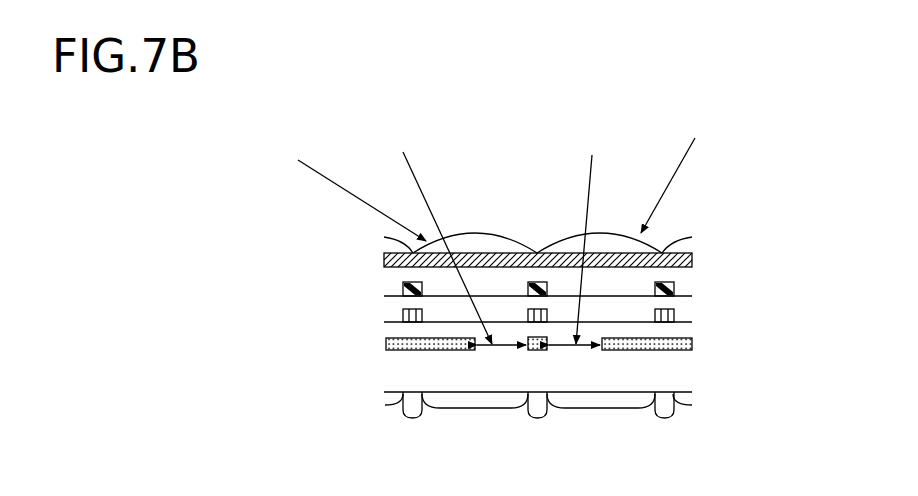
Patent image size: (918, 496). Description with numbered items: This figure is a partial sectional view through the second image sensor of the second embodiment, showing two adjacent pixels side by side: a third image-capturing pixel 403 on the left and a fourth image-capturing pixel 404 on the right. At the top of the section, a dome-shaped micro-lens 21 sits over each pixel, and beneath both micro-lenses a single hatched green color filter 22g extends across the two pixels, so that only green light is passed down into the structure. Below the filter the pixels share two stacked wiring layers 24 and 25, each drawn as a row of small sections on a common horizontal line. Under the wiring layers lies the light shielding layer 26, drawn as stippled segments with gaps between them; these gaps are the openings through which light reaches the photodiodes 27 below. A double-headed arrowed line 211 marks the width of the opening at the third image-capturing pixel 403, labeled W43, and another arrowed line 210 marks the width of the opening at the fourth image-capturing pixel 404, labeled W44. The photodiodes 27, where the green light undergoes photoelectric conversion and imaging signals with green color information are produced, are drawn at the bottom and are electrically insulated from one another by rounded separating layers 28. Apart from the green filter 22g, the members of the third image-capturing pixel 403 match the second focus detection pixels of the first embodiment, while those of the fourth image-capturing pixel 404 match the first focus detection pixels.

The micro-lens 21 is at (465, 240).
The green color filter 22g is at (640, 257).
The wiring layer 24 is at (403, 283).
The wiring layer 25 is at (403, 311).
The light shielding layer 26 is at (386, 340).
The photodiode 27 is at (450, 397).
The separating layer 28 is at (412, 415).
The arrowed line 210 is at (584, 348).
The arrowed line 211 is at (508, 348).
The third image-capturing pixel 403 is at (344, 187).
The fourth image-capturing pixel 404 is at (680, 173).
The width W43 is at (432, 234).
The width W44 is at (589, 234).